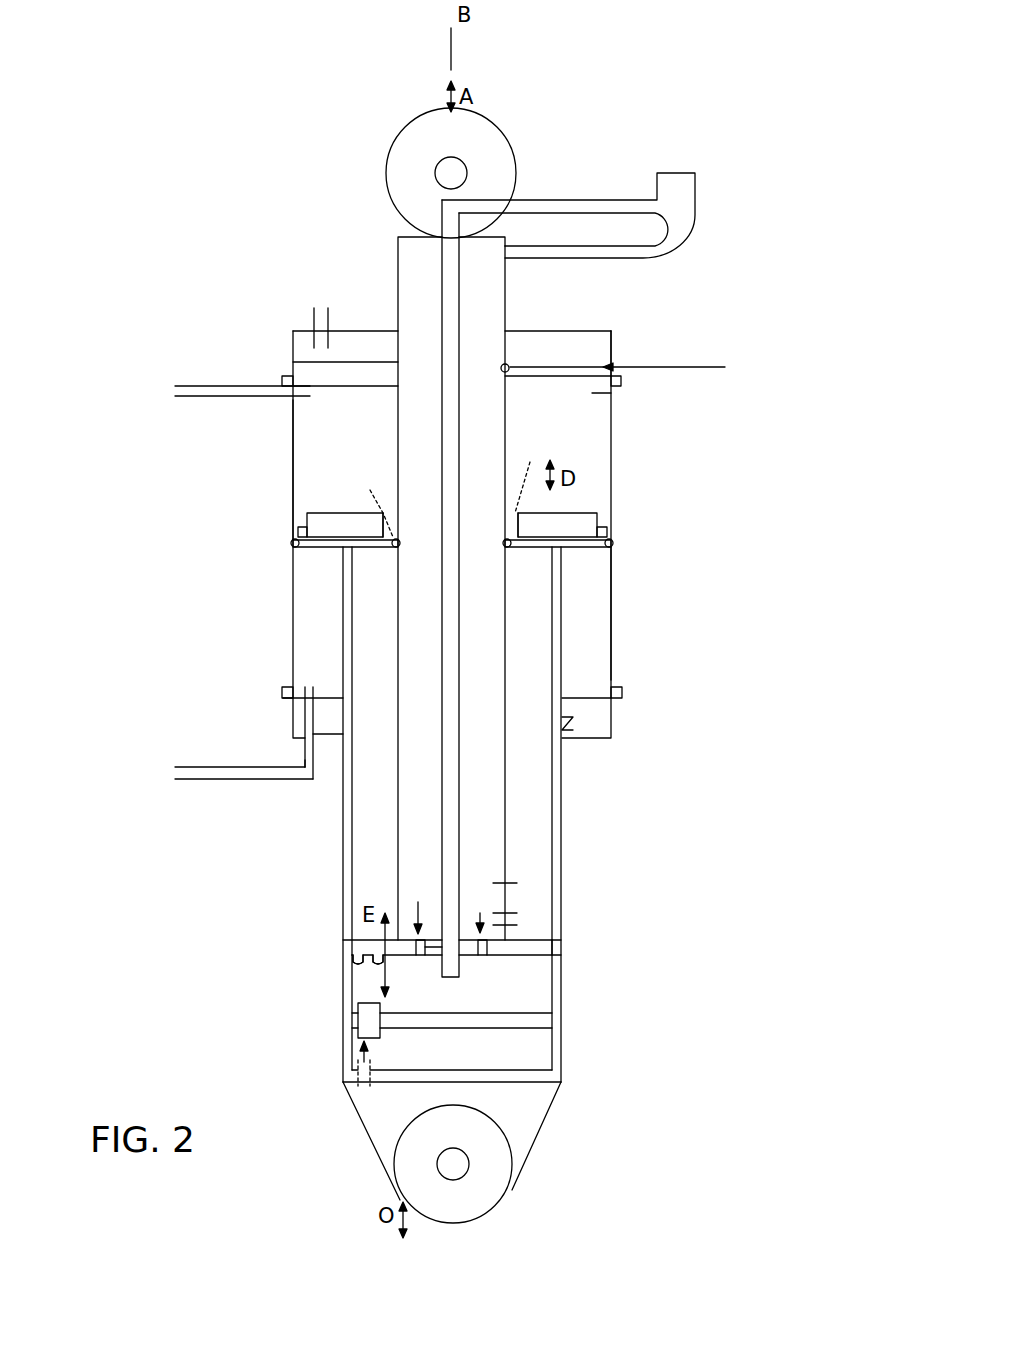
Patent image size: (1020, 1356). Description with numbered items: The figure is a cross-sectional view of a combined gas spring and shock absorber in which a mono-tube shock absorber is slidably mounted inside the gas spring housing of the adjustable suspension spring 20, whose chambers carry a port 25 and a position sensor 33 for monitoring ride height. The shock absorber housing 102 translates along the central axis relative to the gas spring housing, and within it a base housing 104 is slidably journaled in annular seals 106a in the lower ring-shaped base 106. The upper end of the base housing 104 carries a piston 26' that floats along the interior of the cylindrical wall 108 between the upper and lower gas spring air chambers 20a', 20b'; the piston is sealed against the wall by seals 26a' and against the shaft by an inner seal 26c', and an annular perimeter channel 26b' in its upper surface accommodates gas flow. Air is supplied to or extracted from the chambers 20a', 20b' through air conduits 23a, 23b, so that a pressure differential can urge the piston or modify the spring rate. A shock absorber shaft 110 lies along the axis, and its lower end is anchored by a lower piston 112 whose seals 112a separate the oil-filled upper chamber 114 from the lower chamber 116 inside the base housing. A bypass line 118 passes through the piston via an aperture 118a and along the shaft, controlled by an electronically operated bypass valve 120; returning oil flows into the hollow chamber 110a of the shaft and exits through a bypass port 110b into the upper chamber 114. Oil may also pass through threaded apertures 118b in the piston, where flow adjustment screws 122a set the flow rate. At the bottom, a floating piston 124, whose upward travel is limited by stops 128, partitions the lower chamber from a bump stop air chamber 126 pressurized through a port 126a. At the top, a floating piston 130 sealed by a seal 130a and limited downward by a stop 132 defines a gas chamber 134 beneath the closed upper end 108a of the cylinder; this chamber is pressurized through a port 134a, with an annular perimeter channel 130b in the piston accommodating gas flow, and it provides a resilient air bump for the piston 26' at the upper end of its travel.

The adjustable suspension spring 20 is at (622, 347).
The air conduit 23a is at (195, 397).
The air conduit 23b is at (212, 780).
The port 25 is at (295, 599).
The piston 26' is at (433, 555).
The seals 26a' is at (483, 536).
The annular perimeter channel 26b' is at (411, 511).
The inner seal 26c' is at (449, 486).
The position sensor 33 is at (454, 521).
The shock absorber housing 102 is at (614, 847).
The base housing 104 is at (562, 928).
The ring-shaped base 106 is at (459, 721).
The annular seals 106a is at (568, 722).
The cylindrical wall 108 is at (613, 505).
The closed upper end 108a is at (355, 331).
The shock absorber shaft 110 is at (398, 282).
The hollow chamber 110a is at (486, 421).
The bypass port 110b is at (513, 913).
The lower piston 112 is at (533, 956).
The seals 112a is at (562, 948).
The upper chamber 114 is at (528, 838).
The lower chamber 116 is at (540, 997).
The bypass line 118 is at (459, 832).
The aperture 118a is at (418, 946).
The threaded apertures 118b is at (479, 974).
The bypass valve 120 is at (660, 200).
The flow adjustment screws 122a is at (449, 902).
The floating piston 124 is at (518, 1028).
The bump stop air chamber 126 is at (498, 1050).
The port 126a is at (363, 1092).
The stops 128 is at (553, 1010).
The floating piston 130 is at (555, 373).
The seal 130a is at (645, 367).
The annular perimeter channel 130b is at (305, 353).
The stop 132 is at (600, 393).
The gas chamber 134 is at (611, 338).
The port 134a is at (318, 308).
The upper gas spring air chamber 20a' is at (447, 470).
The lower gas spring air chamber 20b' is at (449, 613).